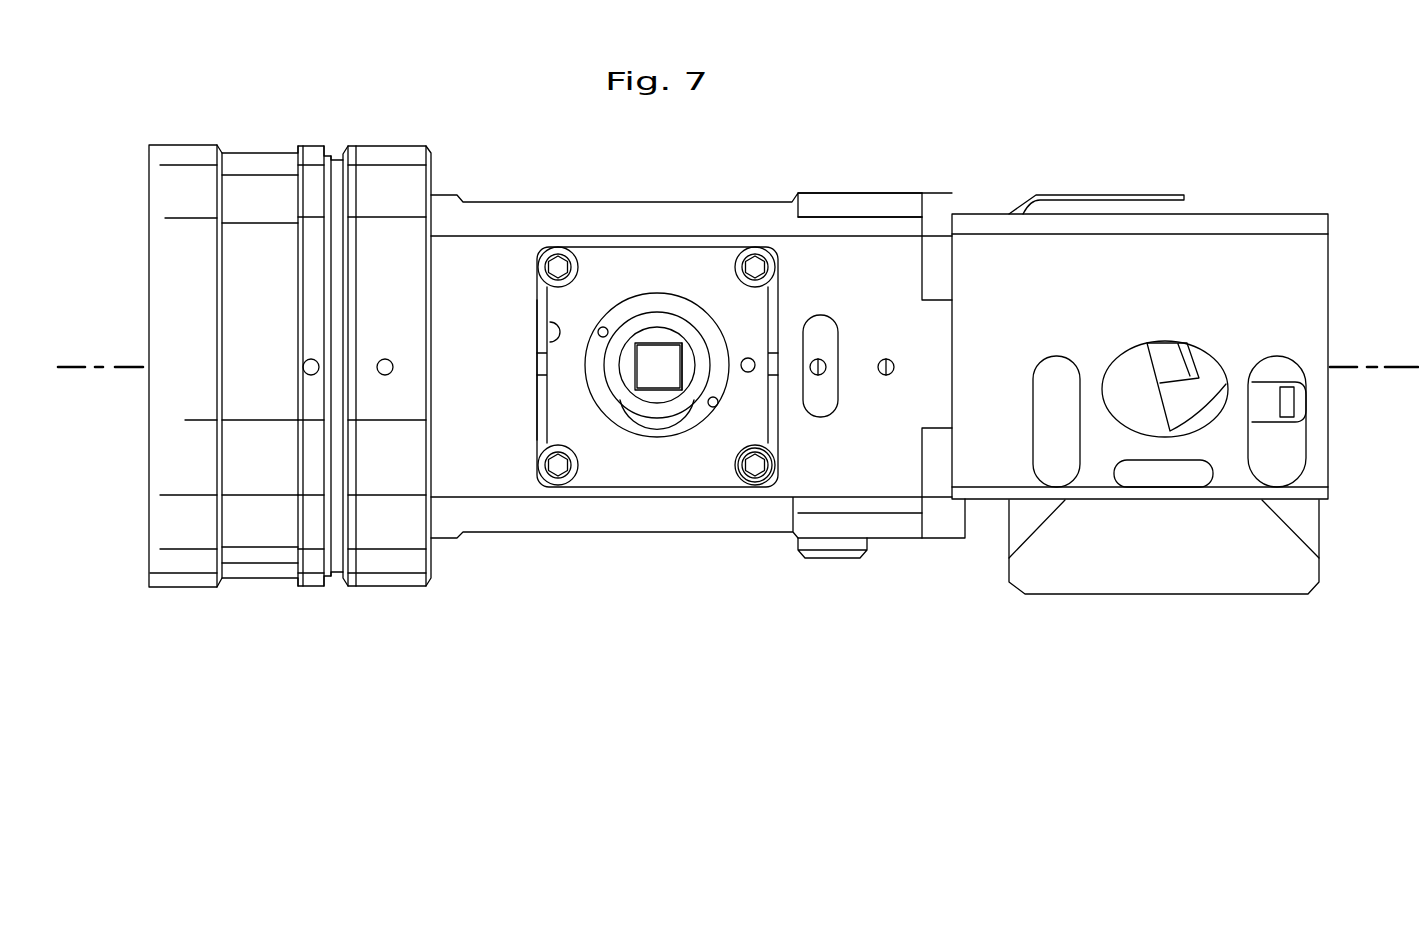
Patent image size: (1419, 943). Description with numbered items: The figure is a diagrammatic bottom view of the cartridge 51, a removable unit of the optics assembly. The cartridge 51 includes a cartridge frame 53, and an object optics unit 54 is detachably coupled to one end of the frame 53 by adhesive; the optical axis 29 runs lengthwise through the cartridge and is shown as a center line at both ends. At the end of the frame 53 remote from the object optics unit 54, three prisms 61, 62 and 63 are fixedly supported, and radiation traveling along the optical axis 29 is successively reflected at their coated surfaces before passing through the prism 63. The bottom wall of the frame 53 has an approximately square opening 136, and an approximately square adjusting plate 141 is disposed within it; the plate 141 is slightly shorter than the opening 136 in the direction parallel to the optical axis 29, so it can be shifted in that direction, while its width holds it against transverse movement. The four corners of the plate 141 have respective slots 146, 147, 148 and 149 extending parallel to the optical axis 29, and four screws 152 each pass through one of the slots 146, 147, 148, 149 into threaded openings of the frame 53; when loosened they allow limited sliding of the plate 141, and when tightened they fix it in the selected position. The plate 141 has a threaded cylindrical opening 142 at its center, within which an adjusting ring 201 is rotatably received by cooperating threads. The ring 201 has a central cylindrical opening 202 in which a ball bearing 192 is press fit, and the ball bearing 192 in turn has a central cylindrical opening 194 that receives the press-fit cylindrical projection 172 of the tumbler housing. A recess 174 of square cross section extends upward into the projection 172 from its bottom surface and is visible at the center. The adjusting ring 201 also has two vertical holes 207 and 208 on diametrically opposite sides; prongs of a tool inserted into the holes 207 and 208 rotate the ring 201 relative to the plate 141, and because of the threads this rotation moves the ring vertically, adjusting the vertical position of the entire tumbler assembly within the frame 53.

The optical axis 29 is at (1374, 365).
The cartridge 51 is at (993, 95).
The cartridge frame 53 is at (867, 198).
The object optics unit 54 is at (258, 150).
The prism 61 is at (1010, 516).
The prism 62 is at (1178, 596).
The prism 63 is at (1318, 522).
The opening 136 is at (540, 320).
The adjusting plate 141 is at (637, 246).
The threaded cylindrical opening 142 is at (670, 294).
The slot 146 is at (602, 246).
The slot 147 is at (598, 497).
The slot 148 is at (715, 497).
The slot 149 is at (717, 250).
The screw 152 is at (780, 467).
The cylindrical projection 172 is at (630, 380).
The recess 174 is at (628, 380).
The ball bearing 192 is at (650, 408).
The central cylindrical opening 194 is at (692, 372).
The adjusting ring 201 is at (597, 390).
The central cylindrical opening 202 is at (665, 415).
The vertical hole 207 is at (598, 330).
The vertical hole 208 is at (718, 404).